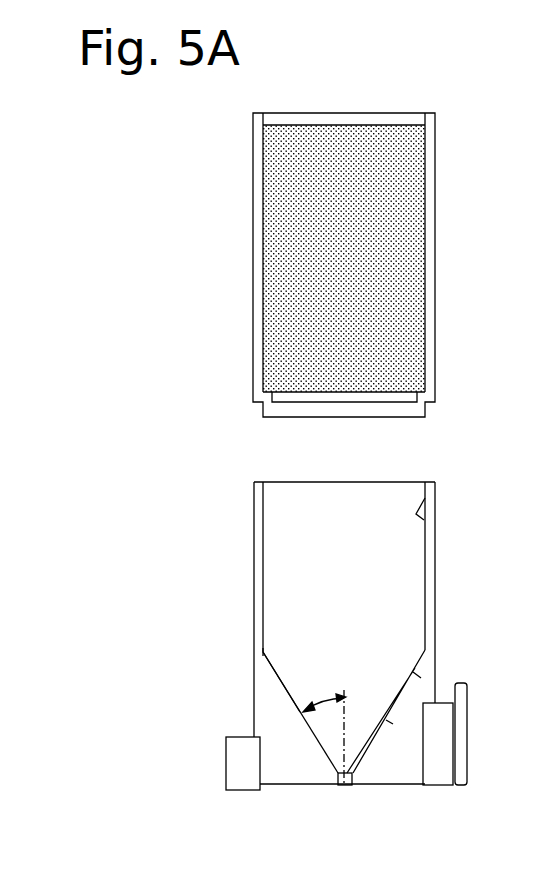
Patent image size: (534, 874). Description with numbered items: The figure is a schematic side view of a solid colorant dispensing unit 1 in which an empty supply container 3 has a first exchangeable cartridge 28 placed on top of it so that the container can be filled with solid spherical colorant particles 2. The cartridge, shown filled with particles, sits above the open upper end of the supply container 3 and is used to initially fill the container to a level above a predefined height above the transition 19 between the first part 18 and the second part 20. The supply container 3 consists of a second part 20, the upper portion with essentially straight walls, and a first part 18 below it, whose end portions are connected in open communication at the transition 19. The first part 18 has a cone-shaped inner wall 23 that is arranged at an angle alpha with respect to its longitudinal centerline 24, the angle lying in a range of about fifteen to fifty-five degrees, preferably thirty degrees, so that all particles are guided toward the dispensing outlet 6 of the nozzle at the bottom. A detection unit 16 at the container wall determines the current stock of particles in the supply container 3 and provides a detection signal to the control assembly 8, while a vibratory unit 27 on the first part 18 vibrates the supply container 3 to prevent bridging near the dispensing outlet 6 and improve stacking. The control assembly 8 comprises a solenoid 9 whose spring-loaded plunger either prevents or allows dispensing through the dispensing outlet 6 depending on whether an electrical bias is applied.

The first exchangeable cartridge 28 is at (445, 131).
The solid spherical colorant particles 2 is at (370, 241).
The solid colorant dispensing unit 1 is at (447, 482).
The second part 20 is at (256, 505).
The supply container 3 is at (428, 606).
The detection unit 16 is at (437, 518).
The cone-shaped inner wall 23 is at (252, 692).
The transition 19 is at (262, 652).
The first part 18 is at (254, 692).
The vibratory unit 27 is at (420, 682).
The control assembly 8 is at (225, 761).
The solenoid 9 is at (234, 772).
The longitudinal centerline 24 is at (345, 790).
The dispensing outlet 6 is at (340, 786).